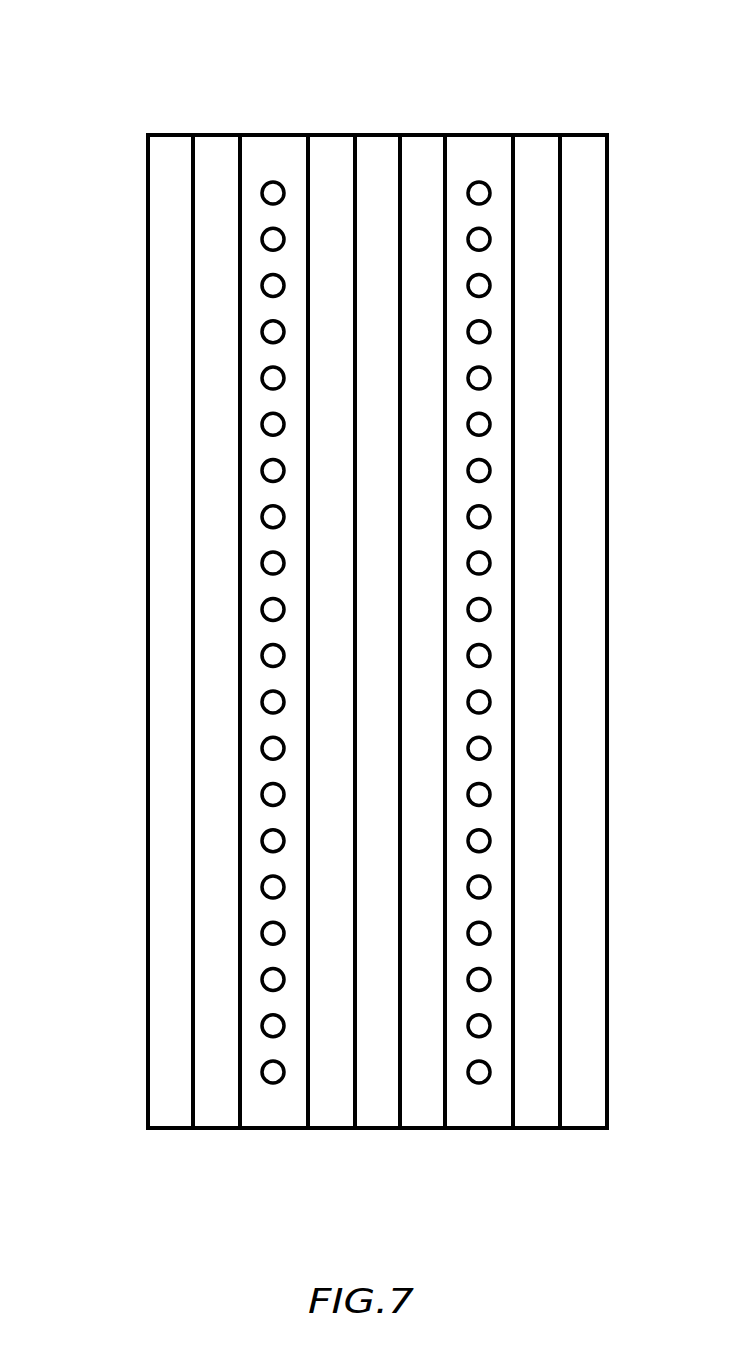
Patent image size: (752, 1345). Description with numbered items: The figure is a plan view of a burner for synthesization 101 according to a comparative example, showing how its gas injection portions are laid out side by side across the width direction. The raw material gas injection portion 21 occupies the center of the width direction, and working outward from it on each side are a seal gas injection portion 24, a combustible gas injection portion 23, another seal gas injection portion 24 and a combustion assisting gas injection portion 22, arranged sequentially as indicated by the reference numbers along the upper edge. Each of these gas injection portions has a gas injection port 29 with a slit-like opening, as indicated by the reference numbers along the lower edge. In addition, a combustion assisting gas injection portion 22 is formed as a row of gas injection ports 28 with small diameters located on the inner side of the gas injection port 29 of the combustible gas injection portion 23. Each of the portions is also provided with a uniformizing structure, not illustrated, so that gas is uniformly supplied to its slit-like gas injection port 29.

The burner for synthesization 101 is at (84, 33).
The raw material gas injection portion 21 is at (378, 135).
The combustion assisting gas injection portion 22 is at (170, 135).
The combustible gas injection portion 23 is at (292, 135).
The seal gas injection portion 24 is at (218, 135).
The gas injection port 28 is at (273, 1075).
The gas injection port 29 is at (172, 1115).